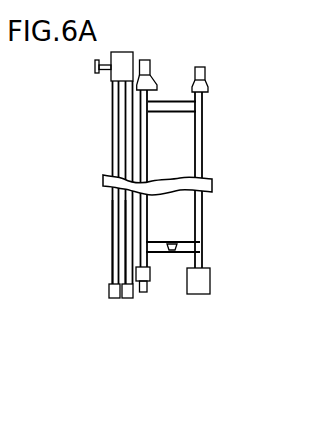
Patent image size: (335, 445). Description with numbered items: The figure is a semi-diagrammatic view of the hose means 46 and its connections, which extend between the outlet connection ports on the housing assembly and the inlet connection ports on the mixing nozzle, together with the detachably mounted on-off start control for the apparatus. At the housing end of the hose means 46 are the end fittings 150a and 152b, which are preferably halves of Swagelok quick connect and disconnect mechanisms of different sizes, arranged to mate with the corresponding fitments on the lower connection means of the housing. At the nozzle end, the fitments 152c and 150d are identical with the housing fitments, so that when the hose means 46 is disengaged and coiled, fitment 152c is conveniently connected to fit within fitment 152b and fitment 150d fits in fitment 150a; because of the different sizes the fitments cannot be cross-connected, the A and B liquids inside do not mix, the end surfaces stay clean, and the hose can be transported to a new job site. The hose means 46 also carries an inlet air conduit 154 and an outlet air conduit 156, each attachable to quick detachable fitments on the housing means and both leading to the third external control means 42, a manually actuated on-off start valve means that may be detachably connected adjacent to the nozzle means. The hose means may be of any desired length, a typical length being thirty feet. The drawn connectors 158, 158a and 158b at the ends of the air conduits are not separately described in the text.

The third external control means 42 is at (103, 85).
The hose means 46 is at (104, 201).
The end fitting 150a is at (203, 295).
The fitment 150d is at (205, 68).
The end fitting 152b is at (156, 299).
The fitment 152c is at (143, 60).
The inlet air conduit 154 is at (112, 230).
The outlet air conduit 156 is at (123, 248).
The tube connectors 158 is at (66, 301).
The first tube connector 158a is at (109, 294).
The second tube connector 158b is at (125, 299).